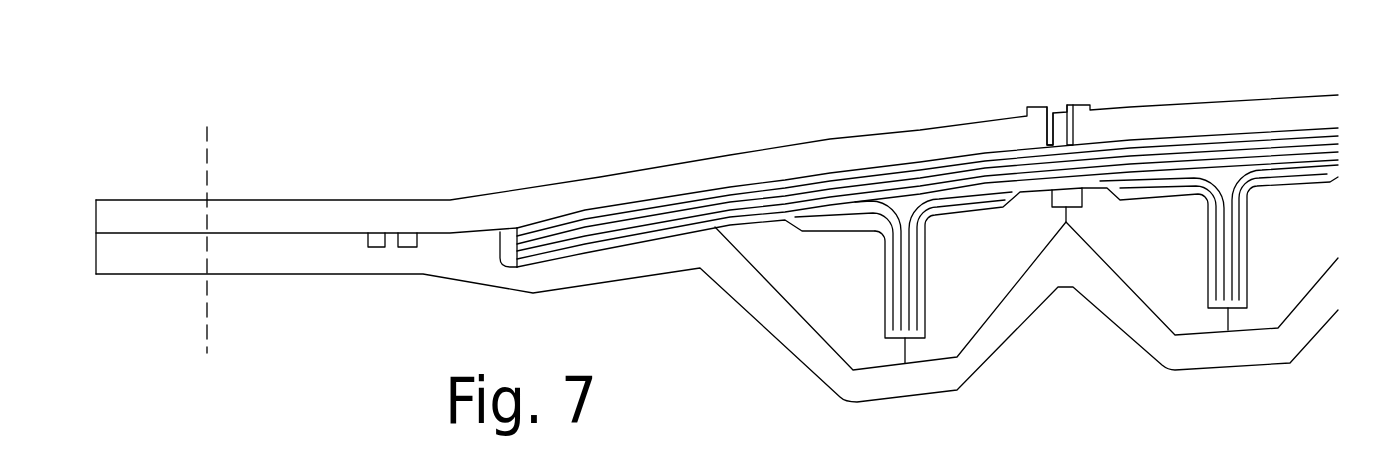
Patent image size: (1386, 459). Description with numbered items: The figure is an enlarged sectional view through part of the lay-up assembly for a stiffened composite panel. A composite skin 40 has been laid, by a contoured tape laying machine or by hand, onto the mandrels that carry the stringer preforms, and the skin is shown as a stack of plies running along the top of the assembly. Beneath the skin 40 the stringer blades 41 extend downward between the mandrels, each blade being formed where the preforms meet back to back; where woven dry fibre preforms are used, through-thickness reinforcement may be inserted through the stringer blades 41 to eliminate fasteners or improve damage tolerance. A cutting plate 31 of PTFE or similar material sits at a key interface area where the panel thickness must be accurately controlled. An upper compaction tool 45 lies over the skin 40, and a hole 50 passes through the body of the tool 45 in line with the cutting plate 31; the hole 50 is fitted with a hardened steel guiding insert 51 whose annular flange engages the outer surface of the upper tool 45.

The cutting plate 31 is at (1057, 207).
The composite skin 40 is at (748, 188).
The stringer blade 41 is at (892, 278).
The upper compaction tool 45 is at (467, 198).
The hole 50 is at (1052, 129).
The guiding insert 51 is at (1088, 105).